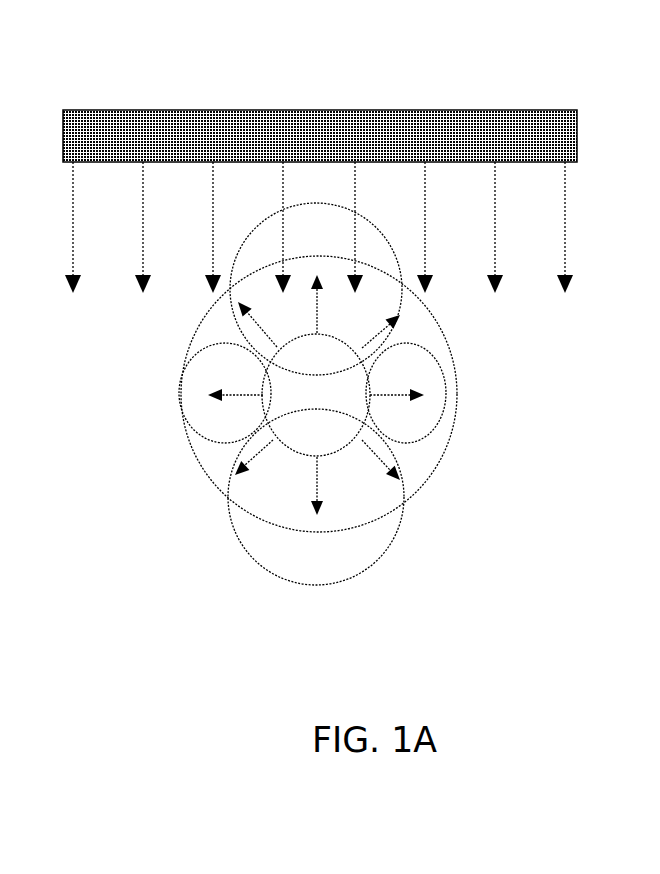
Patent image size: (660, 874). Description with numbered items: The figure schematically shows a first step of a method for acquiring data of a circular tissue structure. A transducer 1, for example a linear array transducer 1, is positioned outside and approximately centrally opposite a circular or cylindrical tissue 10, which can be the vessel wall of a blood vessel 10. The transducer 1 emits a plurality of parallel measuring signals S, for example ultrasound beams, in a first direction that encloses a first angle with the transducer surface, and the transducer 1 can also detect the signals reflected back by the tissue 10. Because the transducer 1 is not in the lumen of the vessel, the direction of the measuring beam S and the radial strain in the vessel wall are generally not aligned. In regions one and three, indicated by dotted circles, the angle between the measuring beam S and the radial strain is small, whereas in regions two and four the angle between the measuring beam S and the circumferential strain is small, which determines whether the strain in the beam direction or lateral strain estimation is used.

The transducer 1 is at (408, 127).
The tissue 10 is at (420, 482).
The measuring beam S is at (324, 227).